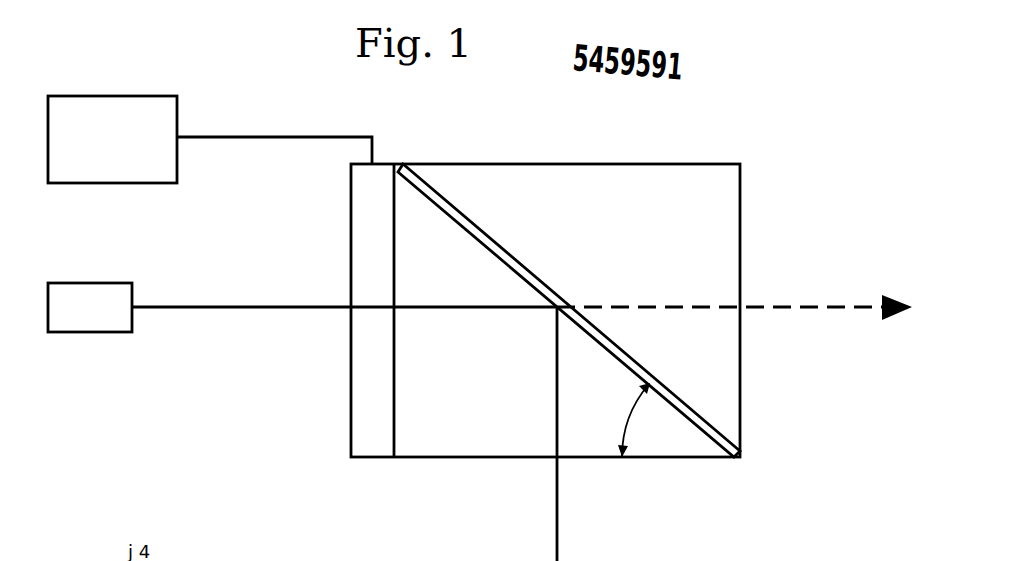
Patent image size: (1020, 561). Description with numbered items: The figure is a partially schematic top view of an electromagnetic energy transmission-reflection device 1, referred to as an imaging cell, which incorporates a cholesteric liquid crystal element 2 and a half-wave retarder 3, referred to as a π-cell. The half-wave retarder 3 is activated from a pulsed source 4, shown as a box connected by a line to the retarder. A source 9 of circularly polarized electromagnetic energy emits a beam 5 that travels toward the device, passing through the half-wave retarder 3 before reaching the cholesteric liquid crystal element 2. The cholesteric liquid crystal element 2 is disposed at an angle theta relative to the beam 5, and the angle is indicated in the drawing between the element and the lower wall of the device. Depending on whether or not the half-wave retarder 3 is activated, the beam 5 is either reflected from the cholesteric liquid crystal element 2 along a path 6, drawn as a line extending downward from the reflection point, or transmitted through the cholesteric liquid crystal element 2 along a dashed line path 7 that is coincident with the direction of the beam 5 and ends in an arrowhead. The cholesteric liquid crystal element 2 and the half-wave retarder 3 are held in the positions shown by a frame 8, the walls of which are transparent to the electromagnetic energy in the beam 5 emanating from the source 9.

The electromagnetic energy transmission-reflection device 1 is at (764, 150).
The cholesteric liquid crystal element 2 is at (440, 185).
The half-wave retarder 3 is at (350, 245).
The pulsed source 4 is at (102, 96).
The beam 5 is at (237, 312).
The path 6 is at (562, 518).
The dashed line path 7 is at (805, 312).
The frame 8 is at (748, 255).
The source 9 is at (88, 335).